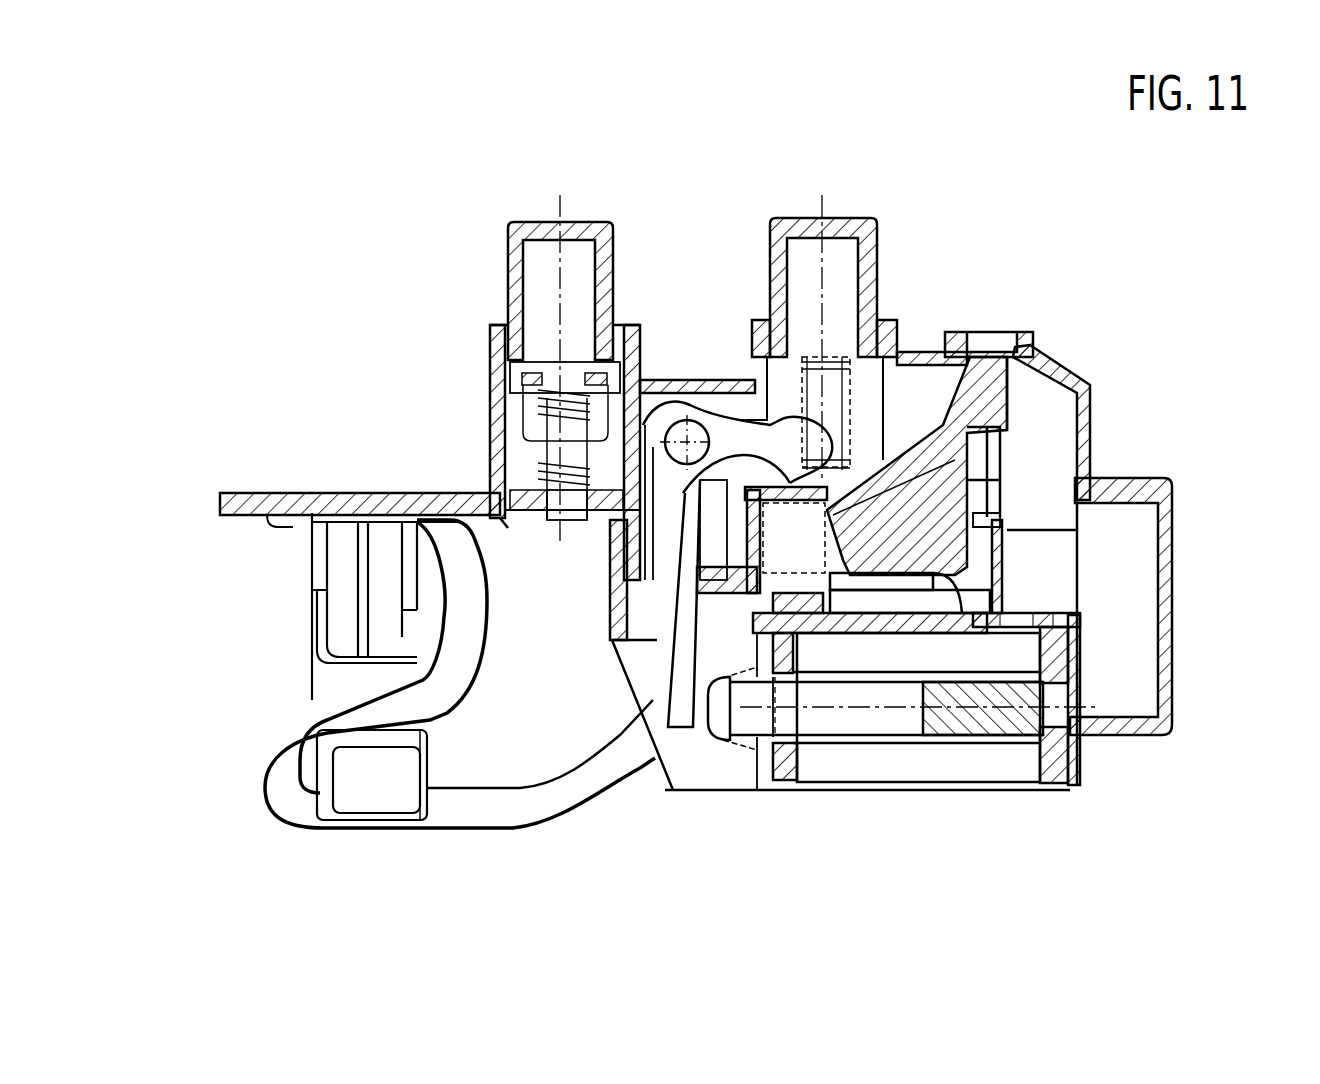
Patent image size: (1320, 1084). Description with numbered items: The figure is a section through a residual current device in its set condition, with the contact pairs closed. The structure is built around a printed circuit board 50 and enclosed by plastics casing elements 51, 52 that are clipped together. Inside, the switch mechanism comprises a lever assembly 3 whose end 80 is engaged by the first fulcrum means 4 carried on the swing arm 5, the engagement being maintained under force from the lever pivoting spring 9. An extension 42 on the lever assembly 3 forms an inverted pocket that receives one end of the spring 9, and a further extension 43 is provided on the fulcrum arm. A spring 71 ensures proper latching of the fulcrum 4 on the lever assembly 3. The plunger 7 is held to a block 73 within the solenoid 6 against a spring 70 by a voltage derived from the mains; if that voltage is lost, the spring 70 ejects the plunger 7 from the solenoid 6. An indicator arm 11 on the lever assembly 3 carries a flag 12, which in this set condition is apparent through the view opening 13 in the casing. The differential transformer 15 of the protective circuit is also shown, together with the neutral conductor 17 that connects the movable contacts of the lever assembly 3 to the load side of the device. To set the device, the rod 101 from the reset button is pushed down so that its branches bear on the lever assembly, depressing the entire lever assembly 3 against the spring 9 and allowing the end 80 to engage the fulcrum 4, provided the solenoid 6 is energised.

The lever assembly 3 is at (1007, 567).
The first fulcrum means 4 is at (683, 582).
The swing arm 5 is at (677, 672).
The solenoid 6 is at (905, 760).
The plunger 7 is at (828, 720).
The lever pivoting spring 9 is at (665, 790).
The indicator arm 11 is at (965, 468).
The flag 12 is at (1028, 340).
The view opening 13 is at (990, 333).
The differential transformer 15 is at (340, 637).
The neutral conductor 17 is at (463, 807).
The extension on lever 42 is at (790, 500).
The extension on arm 43 is at (762, 413).
The printed circuit board 50 is at (323, 505).
The plastics casing element 51 is at (490, 397).
The plastics casing element 52 is at (1172, 733).
The spring 70 is at (745, 748).
The spring 71 is at (690, 513).
The block 73 is at (1001, 718).
The end of lever assembly 80 is at (763, 518).
The rod 101 is at (868, 352).